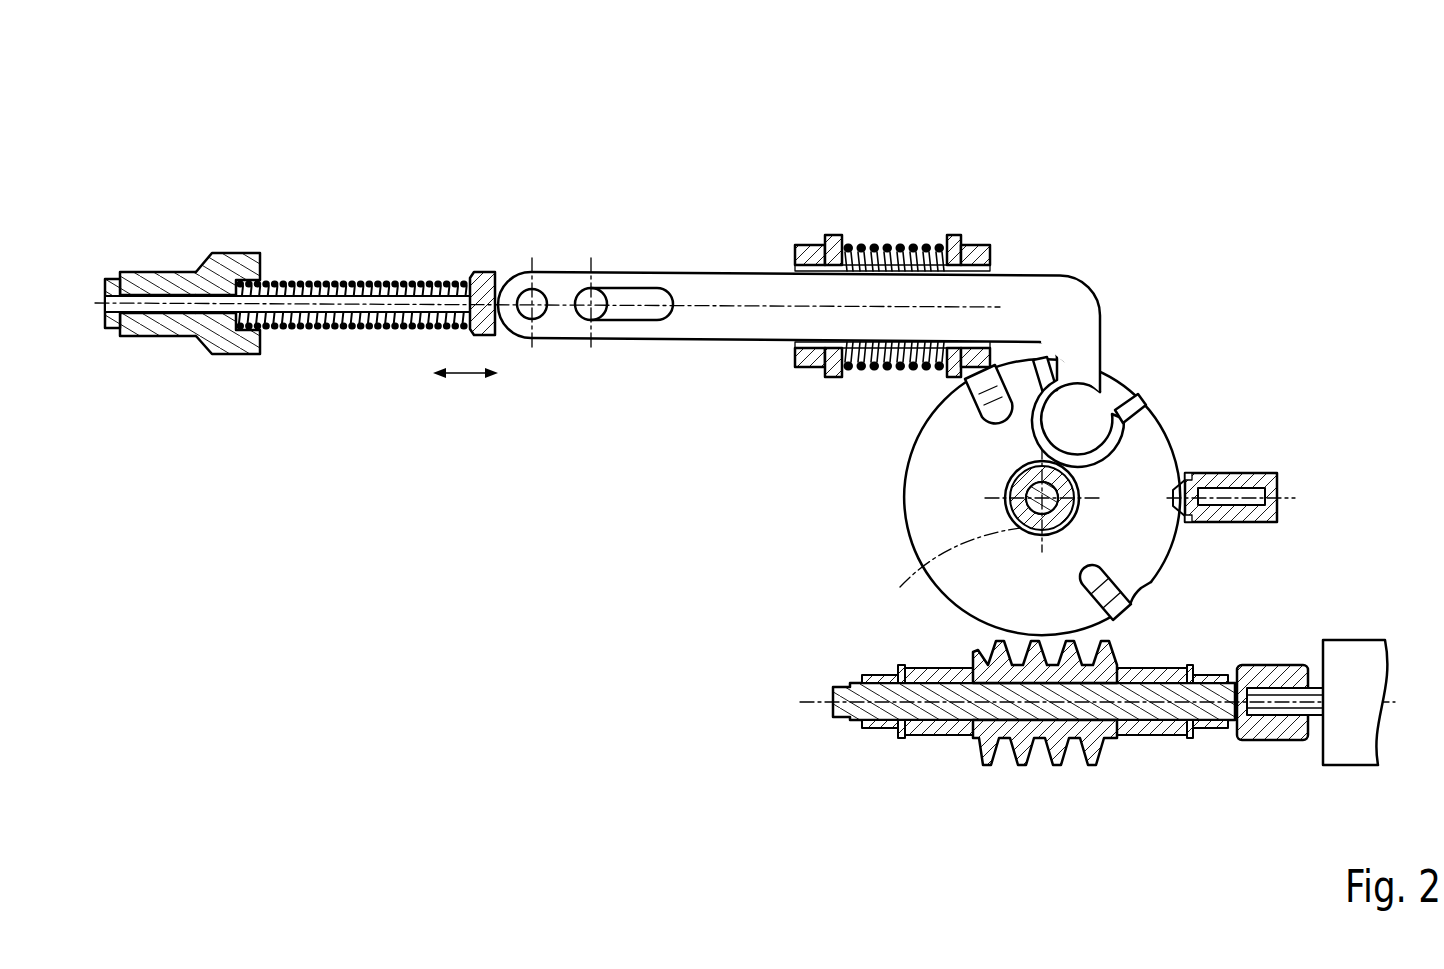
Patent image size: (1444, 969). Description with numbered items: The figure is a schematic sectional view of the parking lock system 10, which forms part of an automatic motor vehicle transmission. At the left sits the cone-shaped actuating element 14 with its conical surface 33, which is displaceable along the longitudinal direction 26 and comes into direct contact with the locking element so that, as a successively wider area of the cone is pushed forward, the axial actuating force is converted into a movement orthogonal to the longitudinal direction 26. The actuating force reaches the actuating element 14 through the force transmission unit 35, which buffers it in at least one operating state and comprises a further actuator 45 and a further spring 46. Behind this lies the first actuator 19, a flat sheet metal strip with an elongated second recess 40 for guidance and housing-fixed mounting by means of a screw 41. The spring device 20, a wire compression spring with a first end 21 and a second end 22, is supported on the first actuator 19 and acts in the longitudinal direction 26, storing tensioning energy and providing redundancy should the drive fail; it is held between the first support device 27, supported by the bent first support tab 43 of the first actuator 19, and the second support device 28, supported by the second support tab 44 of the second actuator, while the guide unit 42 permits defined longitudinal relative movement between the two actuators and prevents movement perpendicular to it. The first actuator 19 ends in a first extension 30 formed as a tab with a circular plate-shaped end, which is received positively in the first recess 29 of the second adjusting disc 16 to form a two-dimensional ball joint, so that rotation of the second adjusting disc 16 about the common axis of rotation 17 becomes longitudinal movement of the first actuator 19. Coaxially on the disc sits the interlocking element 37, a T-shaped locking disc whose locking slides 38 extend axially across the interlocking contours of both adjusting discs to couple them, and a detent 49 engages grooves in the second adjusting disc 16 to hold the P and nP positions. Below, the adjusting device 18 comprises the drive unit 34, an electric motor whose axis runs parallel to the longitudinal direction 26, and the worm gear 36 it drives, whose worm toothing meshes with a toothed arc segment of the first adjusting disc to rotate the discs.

The parking lock system 10 is at (745, 419).
The actuating element 14 is at (156, 283).
The conical surface 33 is at (192, 263).
The force transmission unit 35 is at (375, 277).
The further actuator 45 is at (482, 275).
The first actuator 19 is at (710, 300).
The second recess 40 is at (640, 289).
The screw 41 is at (584, 313).
The further spring 46 is at (378, 327).
The longitudinal direction 26 is at (467, 377).
The first support tab 43 is at (812, 245).
The second end 22 is at (848, 242).
The spring device 20 is at (880, 245).
The first end 21 is at (938, 234).
The second support device 28 is at (960, 245).
The second support tab 44 is at (978, 245).
The first support device 27 is at (831, 378).
The guide unit 42 is at (843, 400).
The locking slide 38 is at (980, 393).
The first extension 30 is at (1080, 427).
The first recess 29 is at (1133, 443).
The second adjusting disc 16 is at (943, 512).
The common axis of rotation 17 is at (921, 571).
The interlocking element 37 is at (1063, 512).
The detent 49 is at (1282, 492).
The drive unit 34 is at (1357, 663).
The adjusting device 18 is at (1037, 683).
The worm gear 36 is at (985, 745).